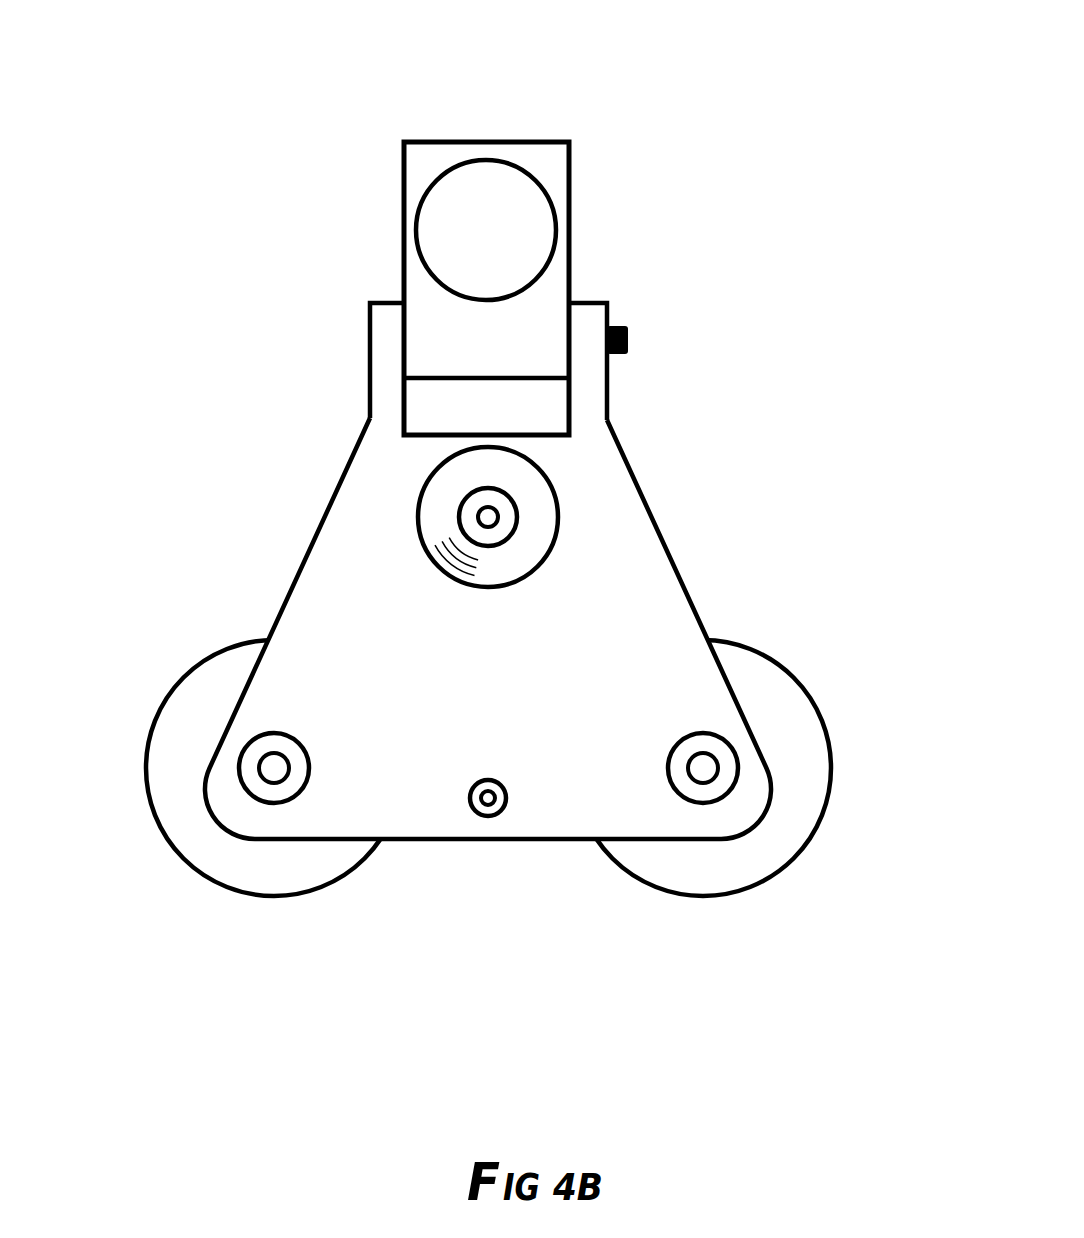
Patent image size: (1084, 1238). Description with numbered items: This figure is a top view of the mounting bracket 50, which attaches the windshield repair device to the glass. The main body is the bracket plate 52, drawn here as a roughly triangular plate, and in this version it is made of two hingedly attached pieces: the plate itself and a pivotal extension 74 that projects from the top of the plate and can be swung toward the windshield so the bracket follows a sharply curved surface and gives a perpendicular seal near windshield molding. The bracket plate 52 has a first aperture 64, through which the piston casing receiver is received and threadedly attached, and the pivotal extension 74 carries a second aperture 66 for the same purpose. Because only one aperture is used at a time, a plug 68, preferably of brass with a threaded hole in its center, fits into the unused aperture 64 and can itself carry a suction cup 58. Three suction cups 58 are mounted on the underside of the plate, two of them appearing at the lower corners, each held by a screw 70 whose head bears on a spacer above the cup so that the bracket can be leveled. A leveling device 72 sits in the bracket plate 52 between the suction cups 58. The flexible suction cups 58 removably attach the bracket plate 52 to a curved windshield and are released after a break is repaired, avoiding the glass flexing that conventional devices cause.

The mounting bracket 50 is at (800, 205).
The bracket plate 52 is at (653, 593).
The suction cups 58 is at (180, 743).
The first aperture 64 is at (423, 487).
The second aperture 66 is at (463, 163).
The plug 68 is at (496, 509).
The screw 70 is at (274, 765).
The leveling device 72 is at (500, 813).
The pivotal extension 74 is at (527, 163).